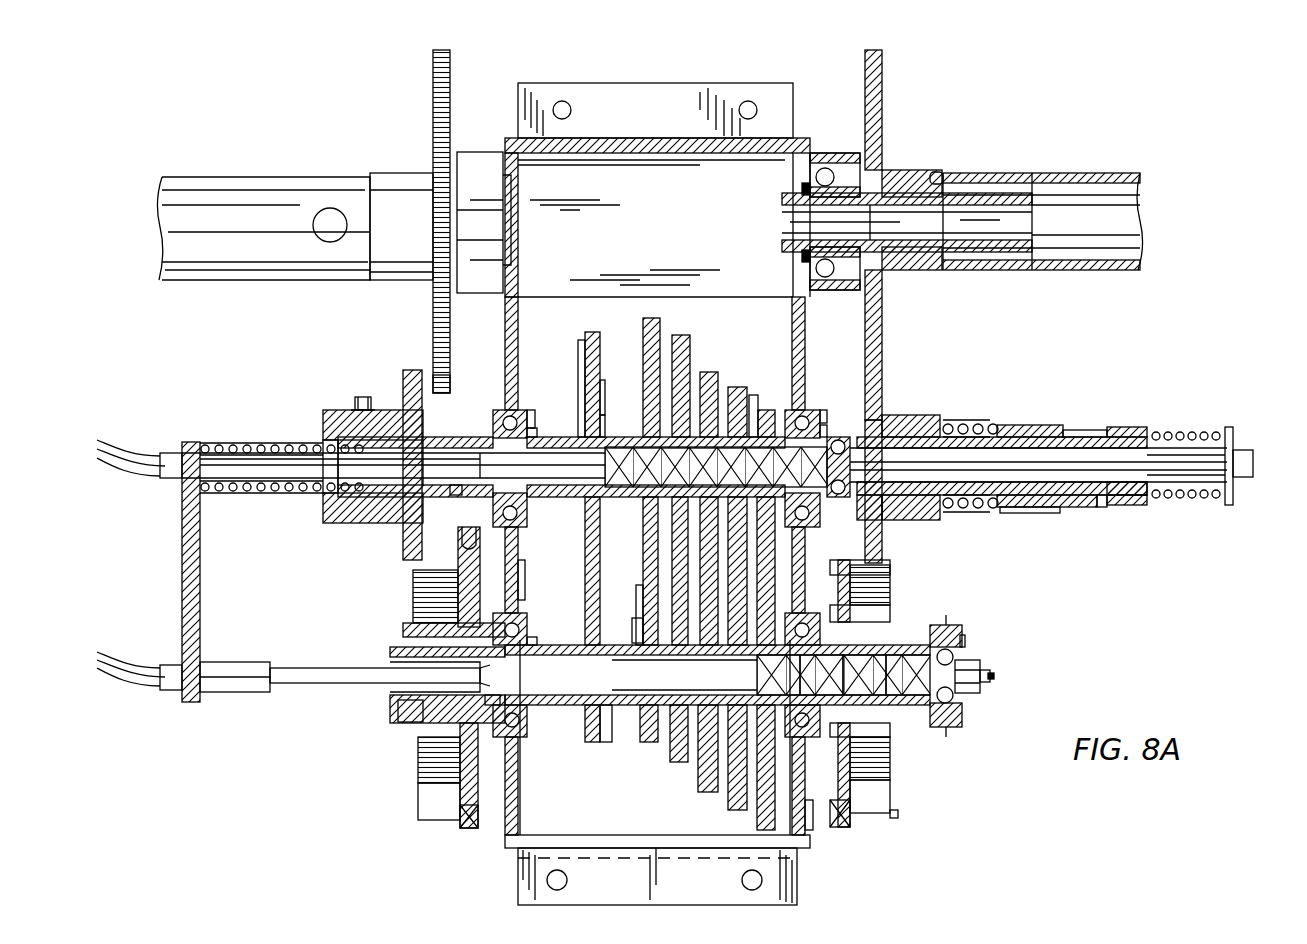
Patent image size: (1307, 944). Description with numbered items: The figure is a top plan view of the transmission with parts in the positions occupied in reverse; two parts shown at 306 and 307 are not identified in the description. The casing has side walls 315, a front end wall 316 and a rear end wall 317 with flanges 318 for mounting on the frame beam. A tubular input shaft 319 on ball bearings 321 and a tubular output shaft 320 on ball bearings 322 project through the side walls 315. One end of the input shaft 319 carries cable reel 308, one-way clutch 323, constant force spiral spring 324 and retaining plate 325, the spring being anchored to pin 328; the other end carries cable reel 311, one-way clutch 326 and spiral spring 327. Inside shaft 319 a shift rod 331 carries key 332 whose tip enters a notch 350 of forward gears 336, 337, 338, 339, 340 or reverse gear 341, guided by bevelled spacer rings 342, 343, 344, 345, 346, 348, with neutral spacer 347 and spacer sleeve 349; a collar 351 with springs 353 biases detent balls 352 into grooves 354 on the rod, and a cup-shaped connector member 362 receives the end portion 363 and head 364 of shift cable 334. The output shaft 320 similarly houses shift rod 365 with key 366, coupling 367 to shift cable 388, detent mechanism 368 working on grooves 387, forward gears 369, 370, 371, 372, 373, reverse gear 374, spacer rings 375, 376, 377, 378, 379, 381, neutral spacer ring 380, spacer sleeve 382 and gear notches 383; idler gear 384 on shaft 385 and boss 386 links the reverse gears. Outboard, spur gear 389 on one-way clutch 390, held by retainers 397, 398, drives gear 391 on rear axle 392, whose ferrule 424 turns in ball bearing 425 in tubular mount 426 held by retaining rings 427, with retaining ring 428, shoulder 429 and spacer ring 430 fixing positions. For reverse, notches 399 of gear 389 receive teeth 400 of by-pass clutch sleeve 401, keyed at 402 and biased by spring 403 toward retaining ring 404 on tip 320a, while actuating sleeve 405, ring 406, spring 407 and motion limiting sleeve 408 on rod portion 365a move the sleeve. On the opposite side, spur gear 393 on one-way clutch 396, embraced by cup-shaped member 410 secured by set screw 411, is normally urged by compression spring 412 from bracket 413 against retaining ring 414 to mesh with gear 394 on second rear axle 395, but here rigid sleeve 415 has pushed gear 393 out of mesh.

The retainer 306 is at (845, 827).
The retainer 307 is at (470, 830).
The cable reel 308 is at (860, 800).
The cable reel 311 is at (450, 800).
The side wall 315 is at (518, 350).
The front end wall 316 is at (630, 835).
The rear end wall 317 is at (683, 153).
The flange 318 is at (690, 83).
The tubular input shaft 319 is at (395, 700).
The tubular output shaft 320 is at (455, 437).
The tip of the output shaft 320a is at (1120, 497).
The ball bearing 321 is at (525, 737).
The ball bearing 322 is at (522, 410).
The one-way clutch 323 is at (895, 725).
The constant force spiral spring 324 is at (890, 778).
The retaining plate 325 is at (890, 610).
The one-way clutch 326 is at (403, 628).
The constant force spiral spring 327 is at (420, 775).
The pin 328 is at (898, 814).
The shift rod 331 is at (1003, 680).
The key 332 is at (608, 735).
The shift cable 334 is at (300, 692).
The forward gear 336 is at (797, 860).
The forward gear 337 is at (740, 810).
The forward gear 338 is at (705, 792).
The forward gear 339 is at (680, 765).
The forward gear 340 is at (650, 742).
The reverse gear 341 is at (590, 742).
The spacer ring 342 is at (890, 588).
The spacer ring 343 is at (829, 675).
The spacer ring 344 is at (788, 675).
The spacer ring 345 is at (748, 675).
The spacer ring 346 is at (706, 675).
The spacer 347 is at (640, 625).
The spacer ring 348 is at (530, 740).
The spacer sleeve 349 is at (522, 722).
The notch 350 is at (537, 641).
The collar 351 is at (965, 637).
The detent ball 352 is at (953, 655).
The helical compression spring 353 is at (948, 625).
The detent groove 354 is at (980, 668).
The connector member 362 is at (520, 628).
The end portion of shift cable 363 is at (527, 615).
The head 364 is at (500, 700).
The shift rod 365 is at (716, 465).
The plain end portion 365a is at (1155, 460).
The key 366 is at (600, 540).
The coupling 367 is at (520, 515).
The detent mechanism 368 is at (840, 437).
The forward gear 369 is at (890, 572).
The forward gear 370 is at (762, 412).
The forward gear 371 is at (752, 395).
The forward gear 372 is at (690, 350).
The forward gear 373 is at (600, 338).
The reverse gear 374 is at (580, 345).
The spacer ring 375 is at (824, 425).
The spacer ring 376 is at (820, 410).
The spacer ring 377 is at (736, 392).
The spacer ring 378 is at (703, 375).
The spacer ring 379 is at (660, 338).
The neutral spacer ring 380 is at (603, 422).
The spacer ring 381 is at (537, 430).
The spacer sleeve 382 is at (531, 418).
The notch 383 is at (603, 395).
The idler gear 384 is at (643, 565).
The shaft 385 is at (643, 592).
The boss 386 is at (525, 578).
The groove 387 is at (862, 455).
The shift cable 388 is at (275, 495).
The spur gear 389 is at (893, 415).
The one-way clutch 390 is at (912, 437).
The gear 391 is at (882, 345).
The rear axle 392 is at (1090, 270).
The spur gear 393 is at (441, 378).
The gear 394 is at (433, 316).
The second rear axle 395 is at (333, 272).
The one-way clutch 396 is at (403, 545).
The retainer 397 is at (882, 515).
The retainer 398 is at (952, 510).
The notch 399 is at (950, 424).
The tooth 400 is at (1000, 426).
The by-pass clutch sleeve 401 is at (1065, 430).
The key 402 is at (1040, 507).
The helical compression spring 403 is at (1010, 513).
The retaining ring 404 is at (1102, 507).
The actuating sleeve 405 is at (1115, 427).
The ring 406 is at (1233, 436).
The helical compression spring 407 is at (1200, 432).
The motion limiting sleeve 408 is at (1195, 500).
The cup-shaped member 410 is at (335, 523).
The set screw 411 is at (363, 397).
The compression spring 412 is at (285, 442).
The bracket 413 is at (182, 603).
The retaining ring 414 is at (455, 495).
The rigid sleeve 415 is at (330, 497).
The ferrule 424 is at (782, 235).
The ball bearing 425 is at (810, 176).
The tubular mount 426 is at (822, 153).
The retaining ring 427 is at (882, 160).
The retaining ring 428 is at (802, 190).
The shoulder 429 is at (942, 173).
The spacer ring 430 is at (870, 228).